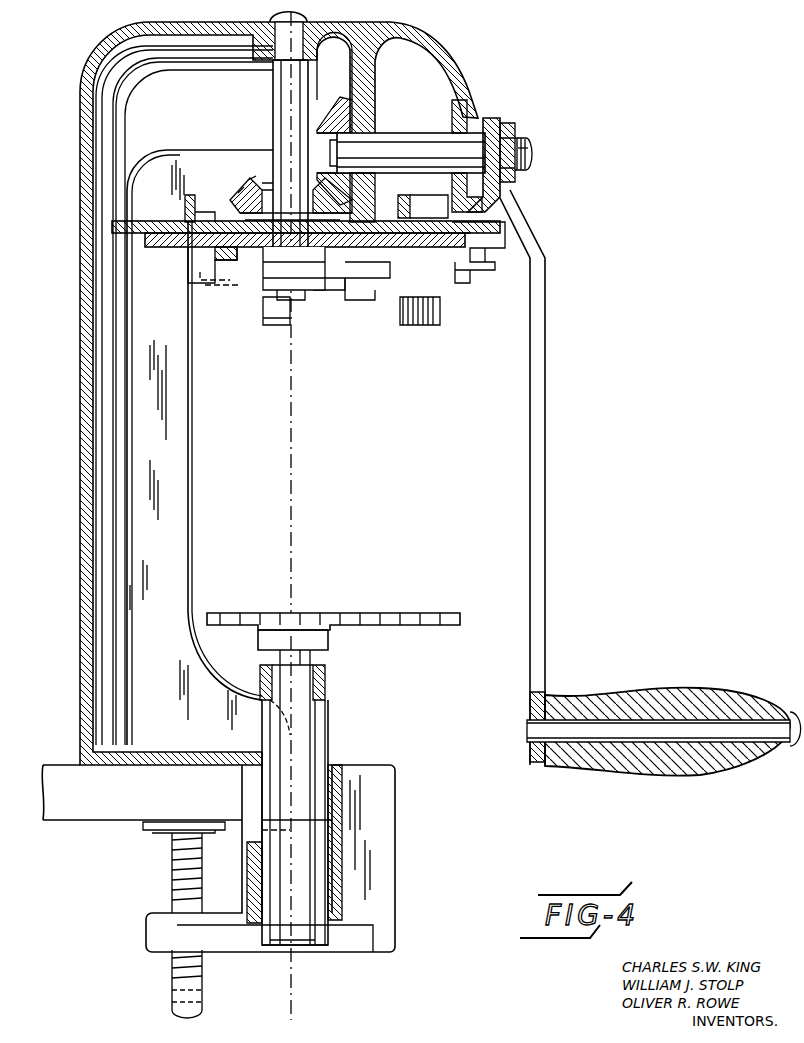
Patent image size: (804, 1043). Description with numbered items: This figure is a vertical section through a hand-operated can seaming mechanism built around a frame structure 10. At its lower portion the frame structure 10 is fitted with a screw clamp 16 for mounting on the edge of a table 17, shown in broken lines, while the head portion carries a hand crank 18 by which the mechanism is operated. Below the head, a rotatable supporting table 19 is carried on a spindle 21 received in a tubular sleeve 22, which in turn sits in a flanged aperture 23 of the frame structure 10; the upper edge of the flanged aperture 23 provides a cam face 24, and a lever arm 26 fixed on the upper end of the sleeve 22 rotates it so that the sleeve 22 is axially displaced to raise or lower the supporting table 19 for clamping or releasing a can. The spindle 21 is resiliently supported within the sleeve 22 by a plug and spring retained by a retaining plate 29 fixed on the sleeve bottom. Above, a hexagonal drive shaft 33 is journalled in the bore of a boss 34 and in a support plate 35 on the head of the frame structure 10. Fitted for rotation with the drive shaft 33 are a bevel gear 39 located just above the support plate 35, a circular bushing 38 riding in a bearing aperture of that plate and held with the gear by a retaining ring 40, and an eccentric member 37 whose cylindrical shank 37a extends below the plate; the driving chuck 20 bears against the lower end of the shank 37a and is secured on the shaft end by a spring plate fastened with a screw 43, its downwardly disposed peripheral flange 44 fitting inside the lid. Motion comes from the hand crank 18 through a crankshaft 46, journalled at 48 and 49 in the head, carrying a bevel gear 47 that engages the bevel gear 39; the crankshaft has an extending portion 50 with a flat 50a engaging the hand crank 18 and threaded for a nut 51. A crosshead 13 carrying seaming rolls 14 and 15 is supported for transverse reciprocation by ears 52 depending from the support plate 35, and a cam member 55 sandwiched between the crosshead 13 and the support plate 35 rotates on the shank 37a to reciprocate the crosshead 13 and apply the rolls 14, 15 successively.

The frame structure 10 is at (80, 386).
The crosshead 13 is at (237, 258).
The seaming roll 14 is at (260, 300).
The seaming roll 15 is at (450, 296).
The screw clamp 16 is at (172, 871).
The table 17 is at (80, 822).
The hand crank 18 is at (546, 488).
The supporting table 19 is at (362, 613).
The driving chuck 20 is at (357, 288).
The spindle 21 is at (318, 660).
The tubular sleeve 22 is at (329, 720).
The flanged aperture 23 is at (247, 890).
The cam face 24 is at (262, 832).
The lever arm 26 is at (327, 680).
The retaining plate 29 is at (282, 946).
The drive shaft 33 is at (273, 103).
The boss 34 is at (322, 44).
The support plate 35 is at (185, 199).
The eccentric member 37 is at (276, 199).
The cylindrical shank 37a is at (330, 286).
The circular bushing 38 is at (238, 192).
The bevel gear 39 is at (250, 178).
The retaining ring 40 is at (290, 180).
The screw 43 is at (293, 291).
The peripheral flange 44 is at (195, 280).
The crankshaft 46 is at (414, 133).
The bevel gear 47 is at (335, 102).
The journal 48 is at (370, 180).
The journal 49 is at (480, 118).
The extending portion 50 is at (528, 153).
The flat 50a is at (526, 145).
The nut 51 is at (510, 122).
The ear 52 is at (200, 258).
The cam member 55 is at (148, 247).